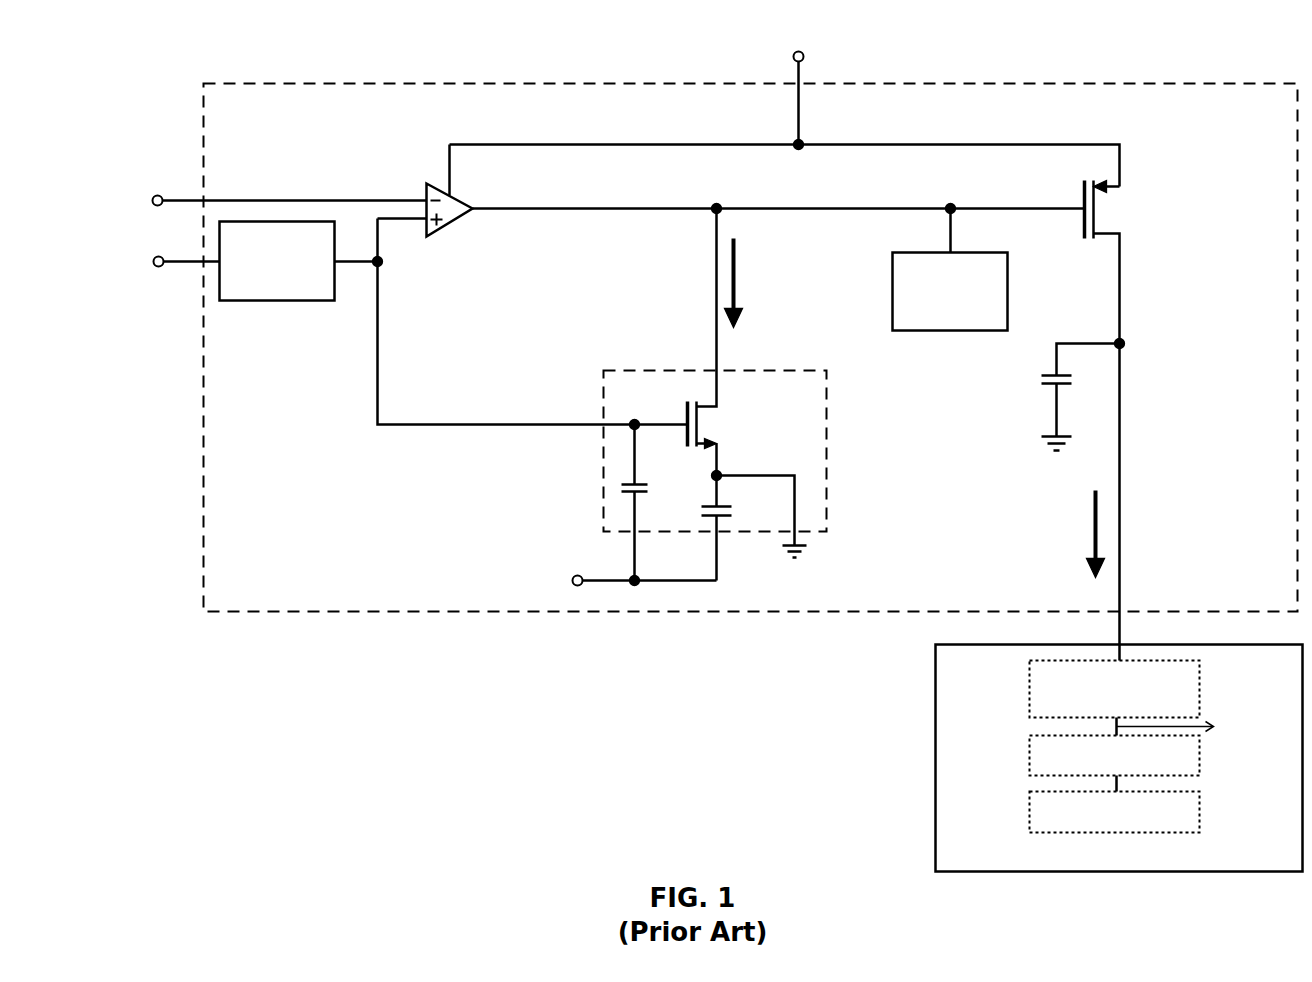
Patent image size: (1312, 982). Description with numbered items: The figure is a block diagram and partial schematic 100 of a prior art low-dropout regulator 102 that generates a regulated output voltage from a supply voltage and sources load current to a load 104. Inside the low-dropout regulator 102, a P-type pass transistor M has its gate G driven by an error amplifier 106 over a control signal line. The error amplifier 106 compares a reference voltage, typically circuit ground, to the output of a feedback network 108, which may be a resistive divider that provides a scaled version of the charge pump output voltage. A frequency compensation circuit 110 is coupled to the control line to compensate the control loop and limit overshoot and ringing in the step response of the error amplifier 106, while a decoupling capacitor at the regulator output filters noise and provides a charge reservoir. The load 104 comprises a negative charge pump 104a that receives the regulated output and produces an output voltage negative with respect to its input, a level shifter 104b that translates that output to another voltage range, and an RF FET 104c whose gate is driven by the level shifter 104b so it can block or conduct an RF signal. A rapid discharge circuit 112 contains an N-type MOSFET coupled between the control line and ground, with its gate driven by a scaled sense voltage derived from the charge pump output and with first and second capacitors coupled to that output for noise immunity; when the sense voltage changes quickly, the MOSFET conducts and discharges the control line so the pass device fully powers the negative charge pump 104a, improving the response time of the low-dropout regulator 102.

The block diagram and partial schematic 100 is at (89, 41).
The low-dropout regulator 102 is at (204, 557).
The load 104 is at (936, 758).
The negative charge pump 104a is at (1030, 690).
The level shifter 104b is at (1030, 756).
The RF FET 104c is at (1030, 814).
The error amplifier 106 is at (449, 224).
The feedback network 108 is at (278, 302).
The frequency compensation circuit 110 is at (923, 332).
The rapid discharge circuit 112 is at (604, 513).